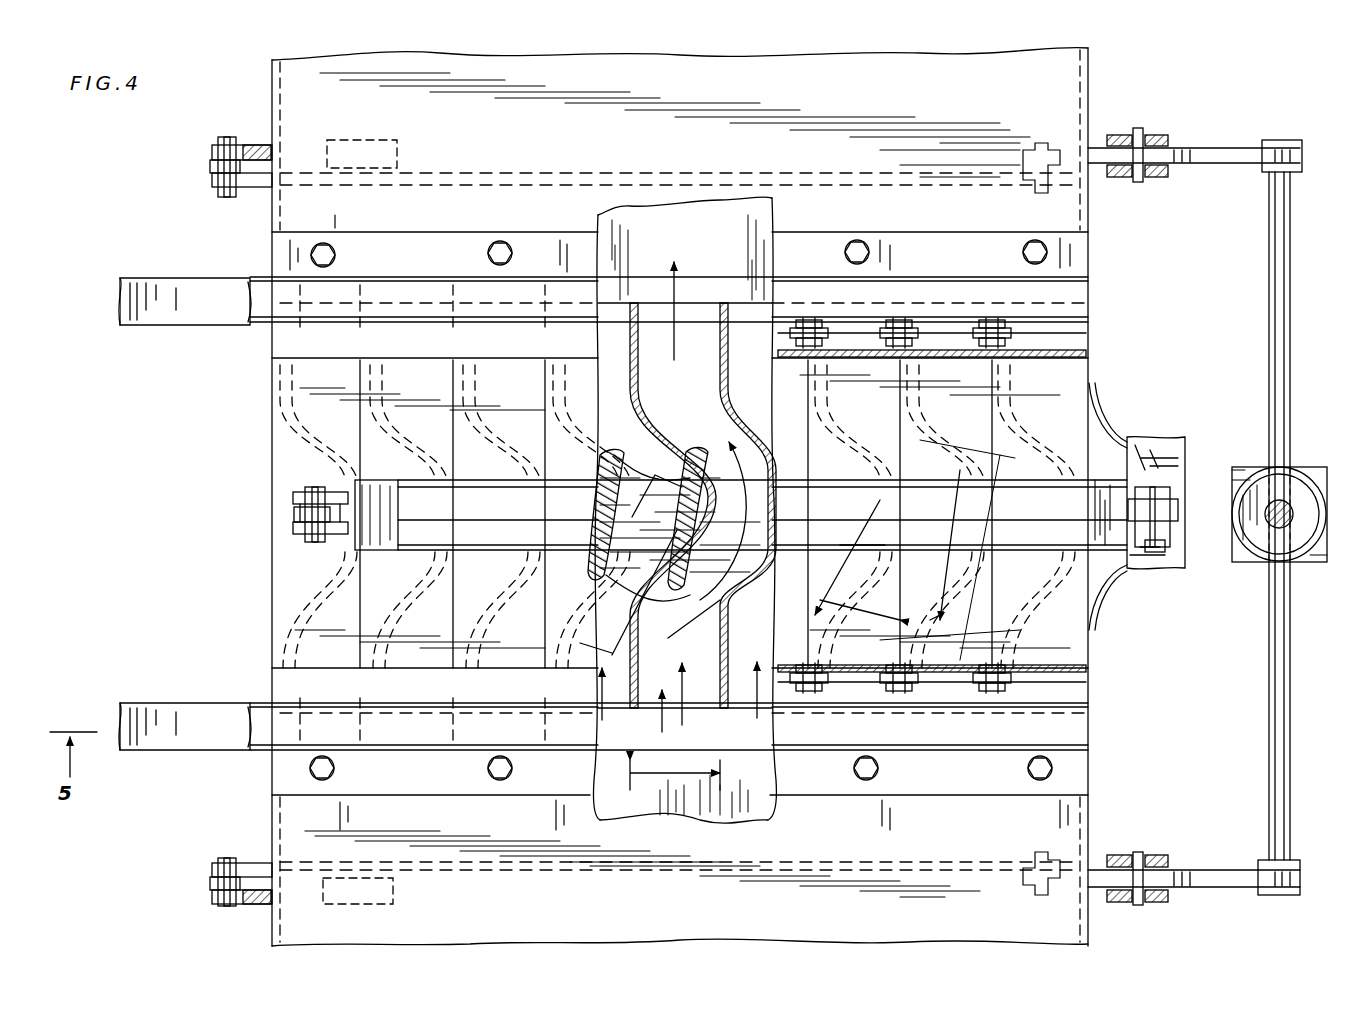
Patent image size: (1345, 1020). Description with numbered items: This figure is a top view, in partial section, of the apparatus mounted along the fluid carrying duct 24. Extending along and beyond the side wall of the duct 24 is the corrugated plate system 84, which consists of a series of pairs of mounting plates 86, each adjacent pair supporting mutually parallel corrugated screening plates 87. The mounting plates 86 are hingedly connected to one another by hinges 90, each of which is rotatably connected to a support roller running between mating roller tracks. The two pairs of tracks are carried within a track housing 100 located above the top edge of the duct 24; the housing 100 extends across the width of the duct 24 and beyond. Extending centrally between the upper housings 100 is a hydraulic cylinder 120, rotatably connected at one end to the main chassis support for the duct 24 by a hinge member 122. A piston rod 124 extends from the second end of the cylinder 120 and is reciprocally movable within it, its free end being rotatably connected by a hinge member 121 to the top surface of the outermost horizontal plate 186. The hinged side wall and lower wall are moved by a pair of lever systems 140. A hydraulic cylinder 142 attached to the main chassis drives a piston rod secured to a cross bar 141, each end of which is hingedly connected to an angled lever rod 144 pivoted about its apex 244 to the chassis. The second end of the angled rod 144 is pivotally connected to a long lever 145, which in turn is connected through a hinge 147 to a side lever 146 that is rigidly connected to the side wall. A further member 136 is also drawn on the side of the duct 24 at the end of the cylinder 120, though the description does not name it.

The fluid carrying duct 24 is at (272, 92).
The corrugated plate system 84 is at (218, 500).
The mounting plates 86 is at (1015, 330).
The corrugated screening plates 87 is at (648, 368).
The hinges 90 is at (930, 348).
The track housing 100 is at (236, 272).
The hydraulic cylinder 120 is at (492, 558).
The hinge member 121 is at (305, 492).
The hinge member 122 is at (1170, 520).
The piston rod 124 is at (340, 534).
The support block 136 is at (1088, 622).
The lever system 140 is at (200, 521).
The cross bar 141 is at (1284, 372).
The hydraulic cylinder 142 is at (1300, 475).
The angled lever rod 144 is at (1215, 170).
The long lever 145 is at (252, 182).
The side lever 146 is at (258, 145).
The hinge 147 is at (220, 193).
The outermost horizontal plate 186 is at (1061, 390).
The apex 244 is at (1150, 135).